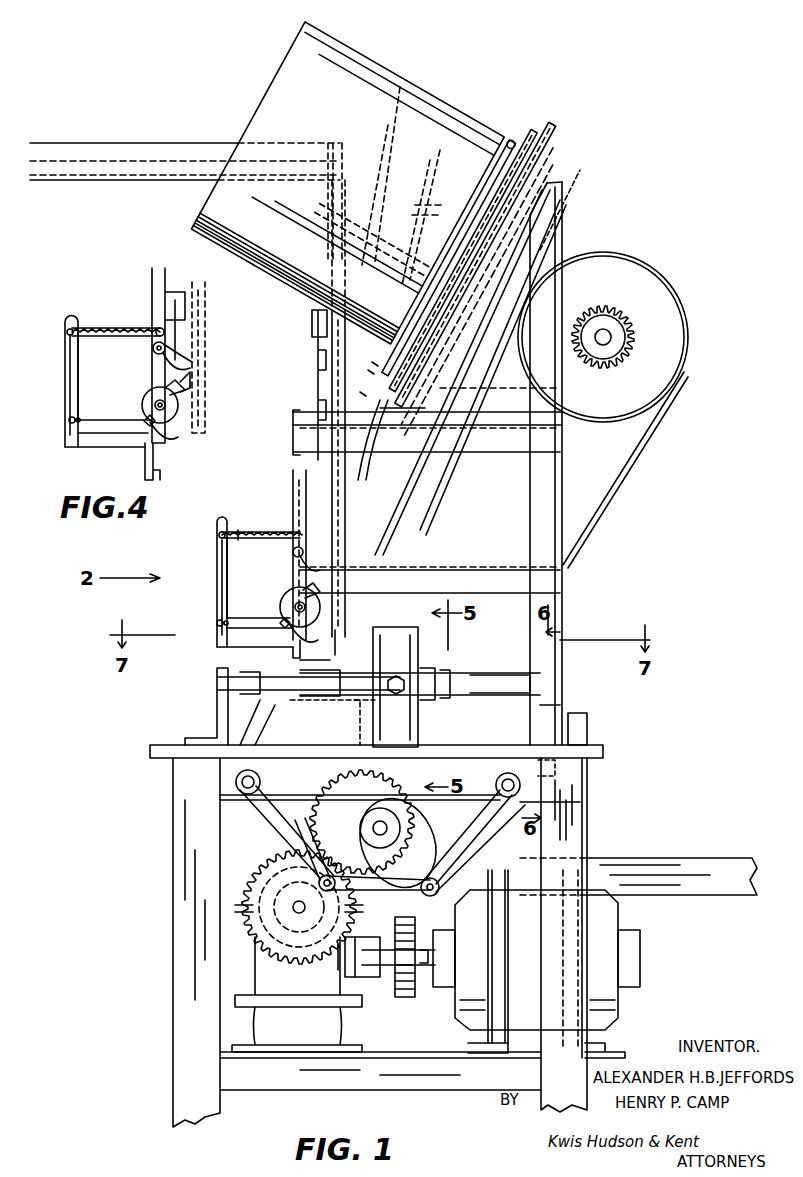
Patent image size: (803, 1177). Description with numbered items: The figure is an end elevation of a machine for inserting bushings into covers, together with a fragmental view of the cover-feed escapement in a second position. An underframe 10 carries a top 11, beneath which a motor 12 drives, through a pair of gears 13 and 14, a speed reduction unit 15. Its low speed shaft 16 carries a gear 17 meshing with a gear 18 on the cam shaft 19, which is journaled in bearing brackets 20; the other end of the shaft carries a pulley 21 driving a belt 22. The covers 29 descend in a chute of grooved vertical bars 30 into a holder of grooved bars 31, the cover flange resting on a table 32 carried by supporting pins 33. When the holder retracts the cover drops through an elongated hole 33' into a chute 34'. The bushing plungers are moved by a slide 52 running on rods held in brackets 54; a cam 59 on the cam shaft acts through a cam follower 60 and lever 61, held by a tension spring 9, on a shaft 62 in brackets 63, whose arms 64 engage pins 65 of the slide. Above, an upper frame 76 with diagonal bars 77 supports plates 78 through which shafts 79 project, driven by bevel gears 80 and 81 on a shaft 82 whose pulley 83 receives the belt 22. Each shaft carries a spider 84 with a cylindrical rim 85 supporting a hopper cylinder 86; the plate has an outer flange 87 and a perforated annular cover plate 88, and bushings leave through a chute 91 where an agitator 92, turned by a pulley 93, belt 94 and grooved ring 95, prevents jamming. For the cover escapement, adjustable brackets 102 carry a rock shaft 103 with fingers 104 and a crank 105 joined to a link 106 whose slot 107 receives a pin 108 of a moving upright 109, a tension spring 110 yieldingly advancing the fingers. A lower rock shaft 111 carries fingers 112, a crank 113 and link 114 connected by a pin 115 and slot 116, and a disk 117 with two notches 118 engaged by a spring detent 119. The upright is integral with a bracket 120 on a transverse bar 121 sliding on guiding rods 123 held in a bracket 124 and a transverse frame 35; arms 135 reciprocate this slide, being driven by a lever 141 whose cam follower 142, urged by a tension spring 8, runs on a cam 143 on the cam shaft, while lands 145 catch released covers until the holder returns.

In FIG. 1, the tension spring 8 is at (300, 830).
In FIG. 1, the tension spring 9 is at (458, 826).
In FIG. 1, the underframe 10 is at (174, 862).
In FIG. 1, the top 11 is at (603, 752).
In FIG. 1, the motor 12 is at (628, 930).
In FIG. 1, the gear 13 is at (414, 985).
In FIG. 1, the gear 14 is at (396, 1000).
In FIG. 1, the speed reduction unit 15 is at (256, 970).
In FIG. 1, the low speed shaft 16 is at (299, 913).
In FIG. 1, the gear 17 is at (262, 874).
In FIG. 1, the gear 18 is at (335, 885).
In FIG. 1, the cam shaft 19 is at (398, 843).
In FIG. 1, the bearing brackets 20 is at (425, 812).
In FIG. 1, the pulley 21 is at (299, 951).
In FIG. 1, the belt 22 is at (622, 475).
In FIG. 4, the covers 29 is at (200, 318).
In FIG. 1, the covers 29 is at (320, 378).
In FIG. 4, the vertical bars 30 is at (205, 332).
In FIG. 1, the vertical bars 30 is at (345, 603).
In FIG. 1, the bars 31 is at (344, 642).
In FIG. 1, the table 32 is at (325, 722).
In FIG. 1, the supporting pins 33 is at (362, 716).
In FIG. 1, the elongated hole 33' is at (378, 783).
In FIG. 1, the chute 34' is at (672, 865).
In FIG. 1, the transverse frame 35 is at (418, 662).
In FIG. 1, the slide 52 is at (468, 672).
In FIG. 1, the brackets 54 is at (588, 722).
In FIG. 1, the cam 59 is at (378, 894).
In FIG. 1, the cam follower 60 is at (432, 896).
In FIG. 1, the lever 61 is at (478, 845).
In FIG. 1, the shaft 62 is at (570, 778).
In FIG. 1, the brackets 63 is at (580, 802).
In FIG. 1, the arms 64 is at (555, 705).
In FIG. 1, the pins 65 is at (520, 672).
In FIG. 1, the upper frame 76 is at (532, 478).
In FIG. 1, the diagonal bars 77 is at (406, 478).
In FIG. 1, the plates 78 is at (560, 165).
In FIG. 1, the shafts 79 is at (555, 252).
In FIG. 1, the bevel gears 80 is at (589, 297).
In FIG. 1, the bevel gears 81 is at (630, 324).
In FIG. 1, the shaft 82 is at (616, 356).
In FIG. 1, the pulley 83 is at (690, 340).
In FIG. 1, the spider 84 is at (440, 150).
In FIG. 1, the cylindrical rim 85 is at (432, 95).
In FIG. 1, the cylinder 86 is at (355, 67).
In FIG. 1, the outer flange 87 is at (556, 125).
In FIG. 1, the annular cover plate 88 is at (540, 128).
In FIG. 1, the chute 91 is at (420, 407).
In FIG. 1, the agitator 92 is at (378, 455).
In FIG. 1, the pulley 93 is at (365, 395).
In FIG. 1, the belt 94 is at (378, 378).
In FIG. 1, the grooved ring 95 is at (512, 132).
In FIG. 1, the adjustable brackets 102 is at (292, 552).
In FIG. 4, the rock shaft 103 is at (153, 349).
In FIG. 4, the fingers 104 is at (165, 365).
In FIG. 1, the fingers 104 is at (300, 568).
In FIG. 4, the crank 105 is at (158, 328).
In FIG. 4, the link 106 is at (112, 328).
In FIG. 1, the link 106 is at (263, 530).
In FIG. 4, the slot 107 is at (70, 348).
In FIG. 1, the slot 107 is at (220, 533).
In FIG. 4, the pin 108 is at (68, 330).
In FIG. 1, the pin 108 is at (218, 540).
In FIG. 4, the moving upright 109 is at (70, 383).
In FIG. 1, the moving upright 109 is at (222, 568).
In FIG. 1, the tension spring 110 is at (238, 528).
In FIG. 4, the rock shaft 111 is at (168, 412).
In FIG. 1, the rock shaft 111 is at (296, 606).
In FIG. 4, the fingers 112 is at (178, 437).
In FIG. 1, the fingers 112 is at (310, 637).
In FIG. 4, the crank 113 is at (148, 412).
In FIG. 1, the crank 113 is at (276, 631).
In FIG. 4, the link 114 is at (98, 447).
In FIG. 1, the link 114 is at (255, 637).
In FIG. 4, the pin 115 is at (67, 420).
In FIG. 1, the pin 115 is at (218, 630).
In FIG. 4, the slot 116 is at (80, 420).
In FIG. 1, the slot 116 is at (217, 620).
In FIG. 4, the disk 117 is at (180, 405).
In FIG. 1, the disk 117 is at (282, 607).
In FIG. 4, the notches 118 is at (178, 392).
In FIG. 1, the notches 118 is at (303, 595).
In FIG. 4, the spring detent 119 is at (190, 378).
In FIG. 4, the bracket 120 is at (105, 450).
In FIG. 1, the bracket 120 is at (255, 652).
In FIG. 1, the transverse bar 121 is at (287, 656).
In FIG. 1, the guiding rods 123 is at (217, 686).
In FIG. 1, the bracket 124 is at (217, 712).
In FIG. 1, the arms 135 is at (272, 722).
In FIG. 1, the lever 141 is at (262, 815).
In FIG. 1, the cam follower 142 is at (363, 945).
In FIG. 1, the cam 143 is at (362, 822).
In FIG. 1, the lands 145 is at (386, 630).